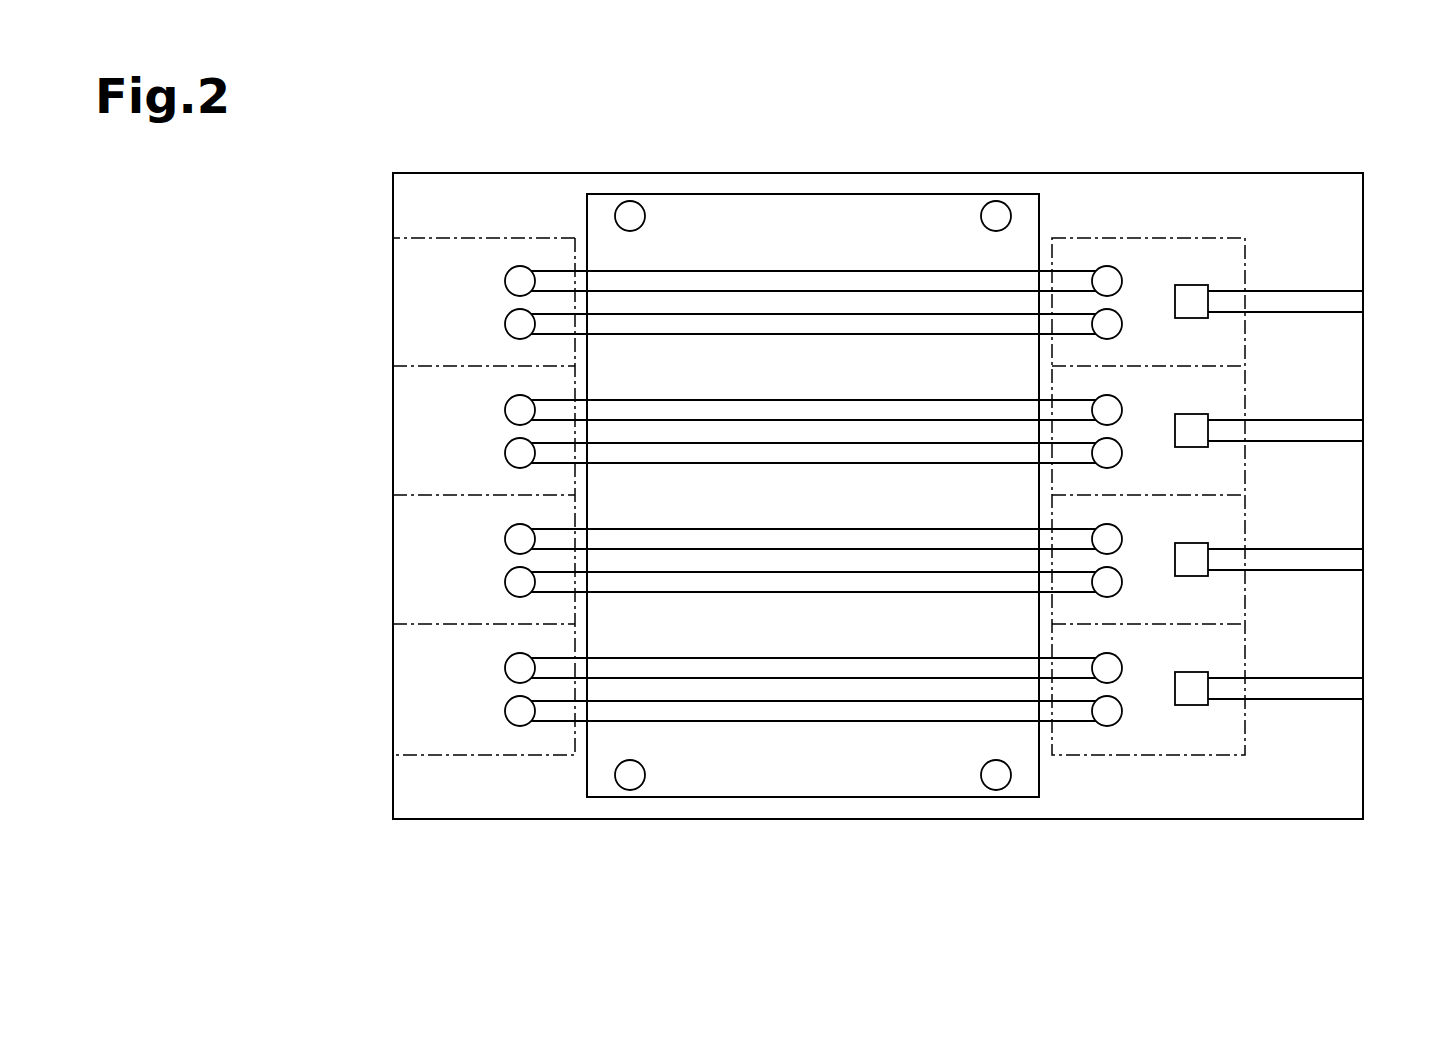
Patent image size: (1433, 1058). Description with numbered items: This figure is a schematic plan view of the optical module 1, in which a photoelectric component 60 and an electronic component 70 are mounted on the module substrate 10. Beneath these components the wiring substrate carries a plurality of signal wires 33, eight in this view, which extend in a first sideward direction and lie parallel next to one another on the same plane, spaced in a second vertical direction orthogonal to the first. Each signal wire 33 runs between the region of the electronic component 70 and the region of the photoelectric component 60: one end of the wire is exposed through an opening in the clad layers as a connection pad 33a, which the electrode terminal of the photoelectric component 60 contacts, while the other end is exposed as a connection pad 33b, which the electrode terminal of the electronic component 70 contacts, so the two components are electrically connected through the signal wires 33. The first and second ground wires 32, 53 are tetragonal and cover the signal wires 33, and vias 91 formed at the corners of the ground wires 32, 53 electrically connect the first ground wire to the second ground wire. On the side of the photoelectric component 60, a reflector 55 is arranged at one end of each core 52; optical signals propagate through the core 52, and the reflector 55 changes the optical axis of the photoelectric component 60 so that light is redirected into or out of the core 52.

The optical module 1 is at (1385, 156).
The module substrate 10 is at (1327, 172).
The first ground wire 32 is at (813, 452).
The second ground wire 53 is at (848, 193).
The signal wire 33 is at (787, 313).
The connection pad 33a is at (1122, 321).
The connection pad 33b is at (505, 322).
The core 52 is at (1315, 291).
The reflector 55 is at (1188, 318).
The photoelectric component 60 is at (1140, 238).
The electronic component 70 is at (486, 238).
The via 91 is at (630, 212).